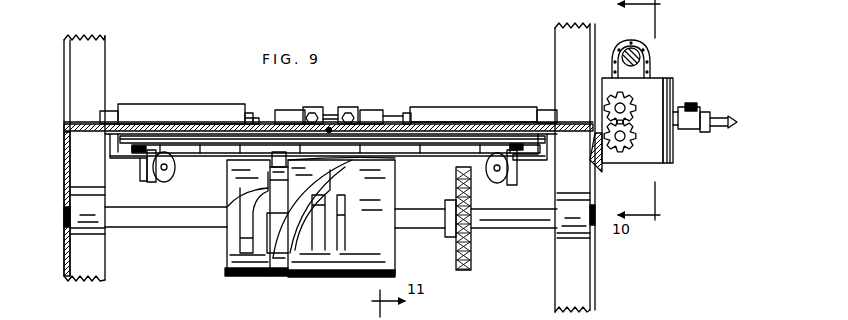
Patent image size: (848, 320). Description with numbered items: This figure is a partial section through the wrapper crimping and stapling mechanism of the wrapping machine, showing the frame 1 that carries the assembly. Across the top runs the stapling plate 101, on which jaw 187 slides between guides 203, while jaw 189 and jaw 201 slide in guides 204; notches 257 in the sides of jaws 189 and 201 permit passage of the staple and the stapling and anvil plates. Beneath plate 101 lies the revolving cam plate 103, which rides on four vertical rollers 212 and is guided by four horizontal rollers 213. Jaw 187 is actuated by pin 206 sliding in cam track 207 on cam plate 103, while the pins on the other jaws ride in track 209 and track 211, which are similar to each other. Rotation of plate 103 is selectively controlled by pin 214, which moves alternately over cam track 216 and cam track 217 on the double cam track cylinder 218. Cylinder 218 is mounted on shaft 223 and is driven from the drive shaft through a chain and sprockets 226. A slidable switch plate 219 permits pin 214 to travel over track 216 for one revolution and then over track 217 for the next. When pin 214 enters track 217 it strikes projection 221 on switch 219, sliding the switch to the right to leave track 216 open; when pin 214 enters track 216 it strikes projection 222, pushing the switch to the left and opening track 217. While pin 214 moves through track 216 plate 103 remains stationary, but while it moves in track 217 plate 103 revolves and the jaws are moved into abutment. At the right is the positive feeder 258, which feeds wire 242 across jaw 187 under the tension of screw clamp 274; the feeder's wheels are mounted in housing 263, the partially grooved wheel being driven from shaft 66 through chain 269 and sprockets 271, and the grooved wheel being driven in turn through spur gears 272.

The frame post 1 is at (79, 61).
The stapling plate 101 is at (83, 125).
The cam plate 103 is at (182, 147).
The shaft 66 is at (633, 45).
The jaw 187 is at (292, 108).
The jaw 189 is at (250, 110).
The jaw 201 is at (405, 114).
The guides 203 is at (353, 107).
The guides 204 is at (140, 107).
The pin 206 is at (330, 129).
The cam track 207 is at (424, 141).
The track 209 is at (192, 137).
The track 211 is at (482, 142).
The vertical rollers 212 is at (165, 180).
The horizontal rollers 213 is at (139, 156).
The pin 214 is at (262, 156).
The cam track 216 is at (262, 180).
The cam track 217 is at (393, 161).
The double cam track cylinder 218 is at (365, 268).
The slidable switch plate 219 is at (309, 240).
The projection 221 is at (316, 197).
The projection 222 is at (258, 192).
The shaft 223 is at (525, 220).
The sprockets 226 is at (468, 254).
The wire 242 is at (732, 128).
The notches 257 is at (257, 121).
The positive feeder 258 is at (662, 75).
The housing 263 is at (653, 155).
The chain 269 is at (612, 75).
The sprockets 271 is at (645, 56).
The spur gears 272 is at (623, 153).
The screw clamp 274 is at (694, 109).